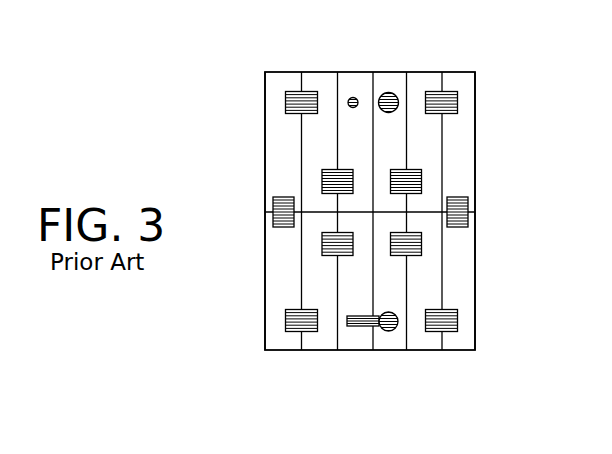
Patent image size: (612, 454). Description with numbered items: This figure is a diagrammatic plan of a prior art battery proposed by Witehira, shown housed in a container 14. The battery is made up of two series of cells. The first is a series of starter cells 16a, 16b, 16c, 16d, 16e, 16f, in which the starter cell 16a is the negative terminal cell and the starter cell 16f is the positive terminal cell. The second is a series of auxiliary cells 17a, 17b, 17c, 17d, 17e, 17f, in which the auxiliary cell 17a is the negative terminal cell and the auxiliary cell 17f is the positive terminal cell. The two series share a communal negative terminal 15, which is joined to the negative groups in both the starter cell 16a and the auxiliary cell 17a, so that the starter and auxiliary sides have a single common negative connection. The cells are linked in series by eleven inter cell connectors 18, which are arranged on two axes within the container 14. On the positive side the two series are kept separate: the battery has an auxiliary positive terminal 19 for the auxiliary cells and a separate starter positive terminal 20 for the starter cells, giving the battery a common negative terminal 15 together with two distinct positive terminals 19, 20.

The container 14 is at (265, 72).
The communal negative terminal 15 is at (373, 327).
The starter cell 16a is at (349, 288).
The starter cell 16b is at (307, 287).
The starter cell 16c is at (280, 267).
The starter cell 16d is at (280, 153).
The starter cell 16e is at (305, 166).
The starter cell 16f is at (366, 96).
The auxiliary cell 17a is at (402, 323).
The auxiliary cell 17b is at (436, 290).
The auxiliary cell 17c is at (463, 263).
The auxiliary cell 17d is at (458, 158).
The auxiliary cell 17e is at (428, 162).
The auxiliary cell 17f is at (398, 128).
The inter cell connector 18 is at (297, 328).
The auxiliary positive terminal 19 is at (352, 97).
The starter positive terminal 20 is at (390, 92).